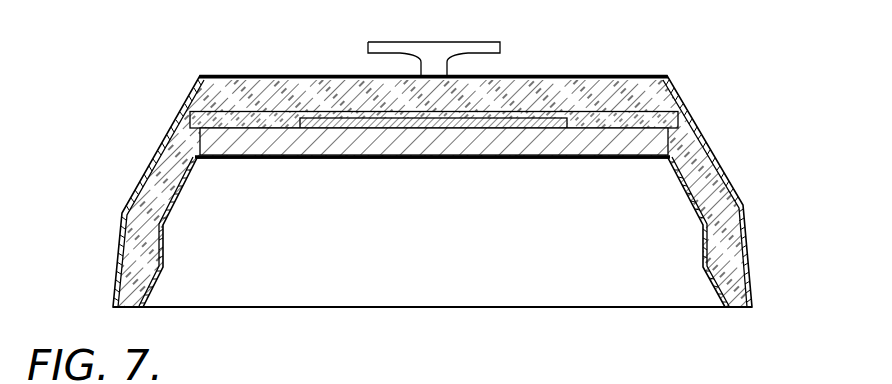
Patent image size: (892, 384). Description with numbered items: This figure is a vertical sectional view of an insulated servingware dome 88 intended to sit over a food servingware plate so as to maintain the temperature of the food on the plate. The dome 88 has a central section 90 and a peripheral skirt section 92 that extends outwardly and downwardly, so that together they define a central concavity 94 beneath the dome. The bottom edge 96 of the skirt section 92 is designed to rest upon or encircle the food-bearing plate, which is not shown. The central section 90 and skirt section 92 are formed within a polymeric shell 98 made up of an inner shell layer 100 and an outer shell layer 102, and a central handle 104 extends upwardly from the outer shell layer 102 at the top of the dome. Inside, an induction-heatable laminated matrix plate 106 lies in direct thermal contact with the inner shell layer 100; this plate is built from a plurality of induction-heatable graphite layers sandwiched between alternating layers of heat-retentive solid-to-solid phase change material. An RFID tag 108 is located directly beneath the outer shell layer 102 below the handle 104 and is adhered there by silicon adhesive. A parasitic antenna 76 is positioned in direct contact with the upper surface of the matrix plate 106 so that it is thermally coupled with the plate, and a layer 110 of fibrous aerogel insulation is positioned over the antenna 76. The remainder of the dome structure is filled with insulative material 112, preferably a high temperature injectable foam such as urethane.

The parasitic antenna 76 is at (507, 130).
The servingware dome 88 is at (138, 113).
The central section 90 is at (639, 60).
The skirt section 92 is at (112, 215).
The central concavity 94 is at (473, 264).
The bottom edge 96 is at (745, 308).
The polymeric shell 98 is at (700, 88).
The inner shell layer 100 is at (373, 159).
The outer shell layer 102 is at (748, 238).
The central handle 104 is at (422, 50).
The laminated matrix plate 106 is at (265, 140).
The RFID tag 108 is at (478, 99).
The layer of insulation 110 is at (630, 128).
The insulative material 112 is at (298, 95).